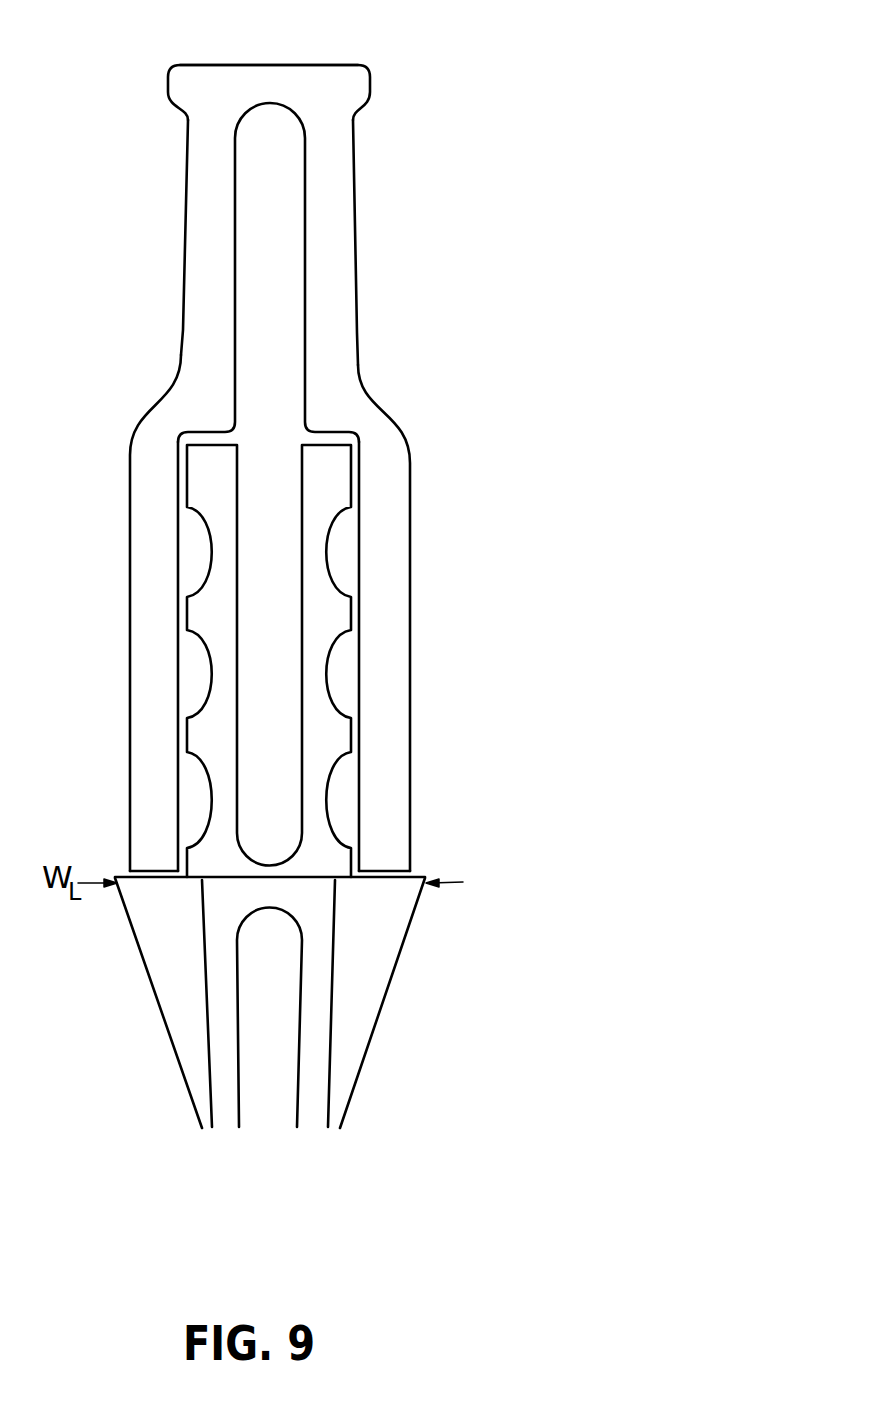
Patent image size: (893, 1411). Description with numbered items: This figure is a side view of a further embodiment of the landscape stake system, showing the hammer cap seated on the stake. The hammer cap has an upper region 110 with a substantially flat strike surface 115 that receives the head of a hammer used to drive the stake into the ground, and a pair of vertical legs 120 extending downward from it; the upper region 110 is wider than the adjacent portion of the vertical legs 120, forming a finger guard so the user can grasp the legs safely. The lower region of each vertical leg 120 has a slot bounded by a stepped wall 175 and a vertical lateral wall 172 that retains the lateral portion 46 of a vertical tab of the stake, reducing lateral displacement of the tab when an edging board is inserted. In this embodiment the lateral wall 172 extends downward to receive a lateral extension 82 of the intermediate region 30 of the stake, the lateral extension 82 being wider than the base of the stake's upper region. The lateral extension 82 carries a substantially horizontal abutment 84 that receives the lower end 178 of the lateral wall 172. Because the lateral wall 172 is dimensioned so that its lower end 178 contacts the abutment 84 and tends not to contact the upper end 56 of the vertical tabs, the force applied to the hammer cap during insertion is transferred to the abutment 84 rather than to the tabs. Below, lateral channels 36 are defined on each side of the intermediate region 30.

The upper region 110 is at (372, 90).
The strike surface 115 is at (308, 64).
The vertical legs 120 is at (356, 229).
The stepped wall 175 is at (410, 640).
The lower end 178 is at (367, 870).
The lateral wall 172 is at (360, 595).
The upper end 56 is at (357, 434).
The lateral portion 46 is at (353, 473).
The abutment 84 is at (423, 876).
The lateral extension 82 is at (405, 937).
The intermediate region 30 is at (352, 1093).
The lateral channels 36 is at (275, 1028).